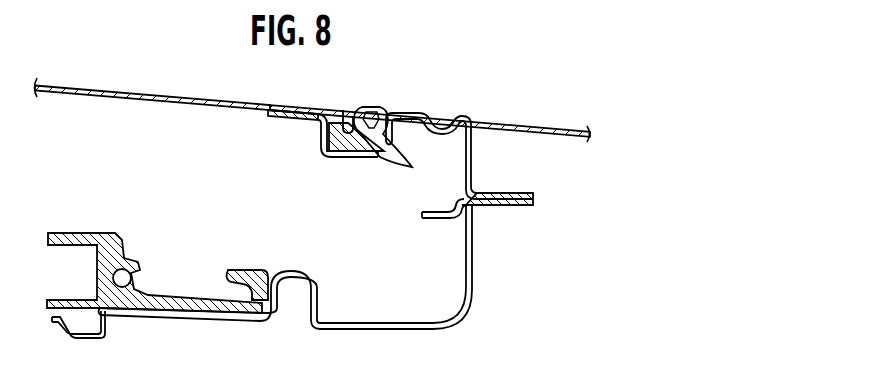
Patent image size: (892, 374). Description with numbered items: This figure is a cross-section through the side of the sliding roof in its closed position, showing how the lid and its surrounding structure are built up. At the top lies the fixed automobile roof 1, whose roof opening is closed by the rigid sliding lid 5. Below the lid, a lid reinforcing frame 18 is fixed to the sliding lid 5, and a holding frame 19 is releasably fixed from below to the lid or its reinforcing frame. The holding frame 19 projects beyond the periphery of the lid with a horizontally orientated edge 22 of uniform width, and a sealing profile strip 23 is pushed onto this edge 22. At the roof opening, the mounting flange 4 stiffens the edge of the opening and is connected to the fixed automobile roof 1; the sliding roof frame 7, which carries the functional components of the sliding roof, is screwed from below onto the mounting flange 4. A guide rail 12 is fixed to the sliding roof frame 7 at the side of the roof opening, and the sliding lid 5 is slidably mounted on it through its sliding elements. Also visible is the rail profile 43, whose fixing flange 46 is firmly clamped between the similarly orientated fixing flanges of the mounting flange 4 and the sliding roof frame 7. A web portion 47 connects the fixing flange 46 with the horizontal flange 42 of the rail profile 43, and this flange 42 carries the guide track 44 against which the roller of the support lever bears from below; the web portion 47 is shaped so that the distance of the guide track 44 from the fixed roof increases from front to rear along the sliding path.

The fixed automobile roof 1 is at (556, 131).
The sliding lid 5 is at (80, 86).
The mounting flange 4 is at (473, 160).
The sliding roof frame 7 is at (473, 285).
The guide rail 12 is at (120, 258).
The lid reinforcing frame 18 is at (330, 106).
The holding frame 19 is at (288, 118).
The edge 22 is at (350, 158).
The sealing profile strip 23 is at (376, 106).
The flange 42 is at (434, 210).
The rail profile 43 is at (415, 216).
The guide track 44 is at (447, 220).
The fixing flange 46 is at (538, 199).
The web portion 47 is at (452, 207).